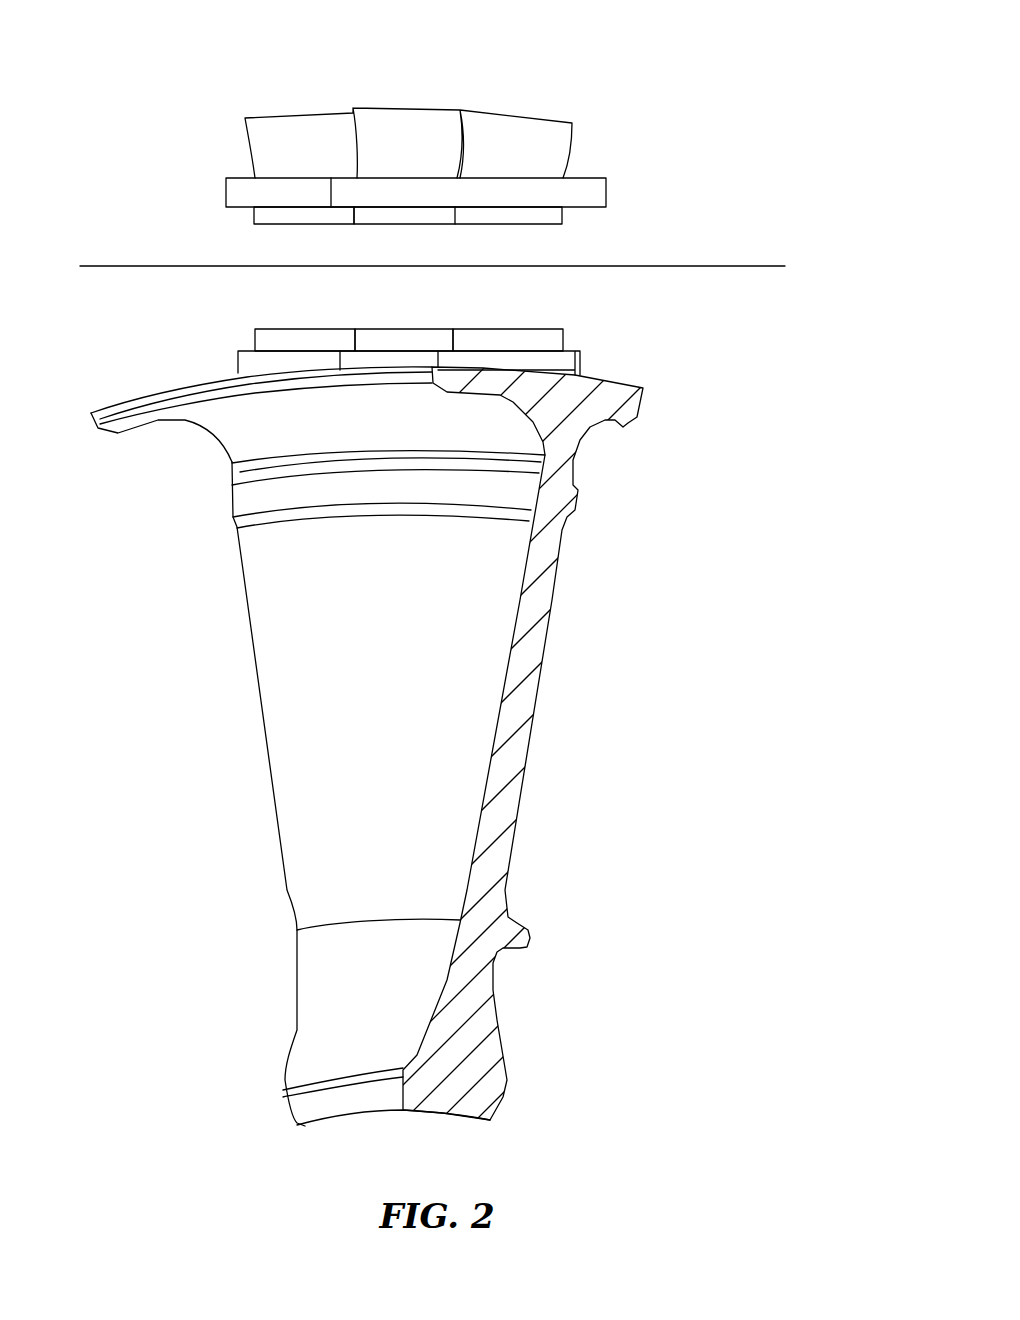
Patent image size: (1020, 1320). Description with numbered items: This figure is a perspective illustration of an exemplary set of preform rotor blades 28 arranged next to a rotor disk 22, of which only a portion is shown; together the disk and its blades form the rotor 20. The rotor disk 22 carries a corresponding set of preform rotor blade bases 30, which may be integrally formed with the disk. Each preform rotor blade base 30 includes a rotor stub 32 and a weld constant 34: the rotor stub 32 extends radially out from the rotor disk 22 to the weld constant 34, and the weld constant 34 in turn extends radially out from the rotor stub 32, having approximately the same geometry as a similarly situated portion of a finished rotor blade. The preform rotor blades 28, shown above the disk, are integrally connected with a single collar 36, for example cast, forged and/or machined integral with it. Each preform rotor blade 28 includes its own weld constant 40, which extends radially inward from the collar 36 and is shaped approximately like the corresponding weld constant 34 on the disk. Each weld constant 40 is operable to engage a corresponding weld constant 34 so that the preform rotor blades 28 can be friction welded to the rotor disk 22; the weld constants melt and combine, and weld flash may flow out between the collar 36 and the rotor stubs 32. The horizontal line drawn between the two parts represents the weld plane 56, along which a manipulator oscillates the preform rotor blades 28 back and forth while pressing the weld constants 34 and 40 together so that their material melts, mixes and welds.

The rotor 20 is at (712, 66).
The rotor disk 22 is at (549, 672).
The preform rotor blades 28 is at (300, 119).
The preform rotor blade bases 30 is at (416, 323).
The rotor stub 32 is at (248, 368).
The weld constant 34 is at (257, 340).
The collar 36 is at (606, 192).
The weld constant 40 is at (285, 226).
The weld plane 56 is at (762, 268).